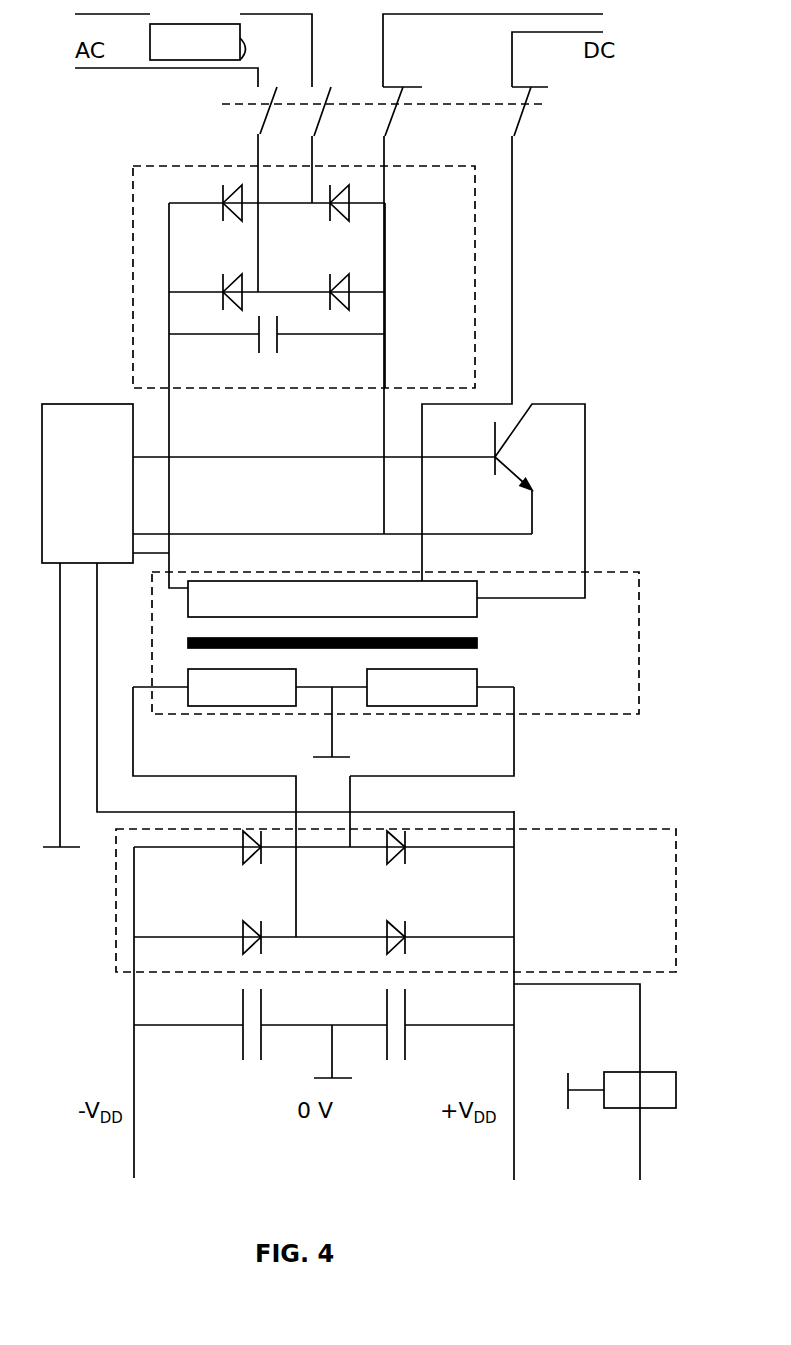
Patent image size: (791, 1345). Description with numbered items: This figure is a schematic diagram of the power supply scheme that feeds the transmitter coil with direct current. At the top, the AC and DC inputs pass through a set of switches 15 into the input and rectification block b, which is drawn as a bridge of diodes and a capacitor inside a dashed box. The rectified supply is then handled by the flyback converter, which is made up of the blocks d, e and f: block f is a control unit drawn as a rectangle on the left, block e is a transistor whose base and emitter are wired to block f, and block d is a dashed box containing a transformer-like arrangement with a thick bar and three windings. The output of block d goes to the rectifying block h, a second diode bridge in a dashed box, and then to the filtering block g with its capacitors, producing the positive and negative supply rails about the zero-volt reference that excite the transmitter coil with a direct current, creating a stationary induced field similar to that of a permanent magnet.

The switches 15 is at (426, 111).
The rectification block b is at (304, 277).
The flyback converter block d is at (386, 754).
The flyback converter block e is at (531, 501).
The flyback converter block f is at (287, 625).
The filtering block g is at (595, 1082).
The rectifying block h is at (396, 900).